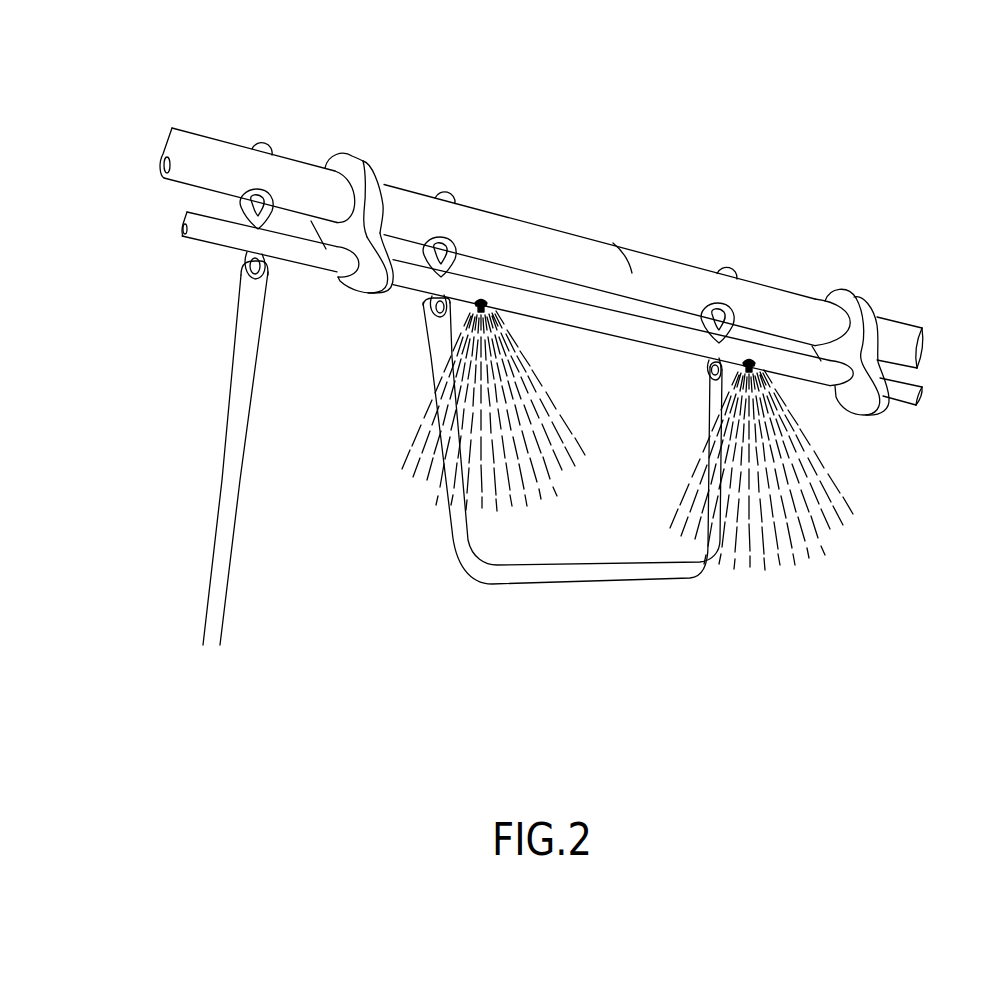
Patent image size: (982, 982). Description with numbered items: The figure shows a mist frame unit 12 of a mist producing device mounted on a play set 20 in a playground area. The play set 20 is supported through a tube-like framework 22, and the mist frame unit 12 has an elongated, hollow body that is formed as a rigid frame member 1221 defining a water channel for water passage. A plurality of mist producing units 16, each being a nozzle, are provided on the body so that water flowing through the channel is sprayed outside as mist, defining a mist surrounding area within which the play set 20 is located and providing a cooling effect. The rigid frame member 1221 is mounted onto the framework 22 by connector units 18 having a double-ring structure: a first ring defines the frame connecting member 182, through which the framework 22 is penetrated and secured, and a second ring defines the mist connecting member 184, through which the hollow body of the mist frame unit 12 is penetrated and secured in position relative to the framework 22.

The play set 20 is at (378, 98).
The framework 22 is at (218, 162).
The mist frame unit 12 is at (223, 237).
The rigid frame member 1221 is at (413, 280).
The mist producing unit 16 is at (482, 300).
The connector unit 18 is at (853, 310).
The frame connecting member 182 is at (377, 183).
The mist connecting member 184 is at (377, 295).